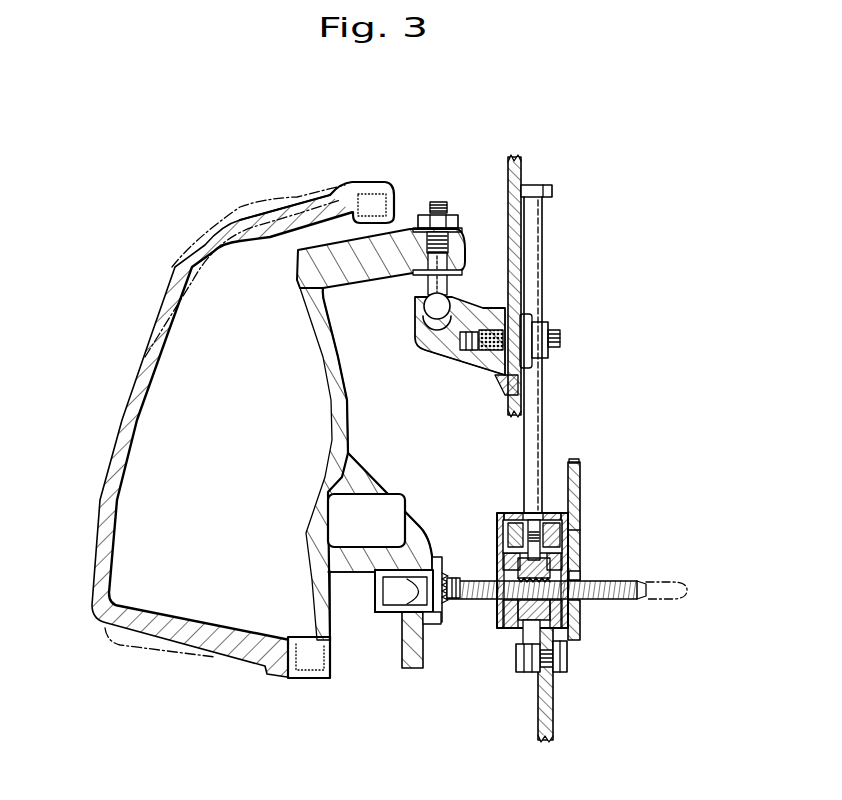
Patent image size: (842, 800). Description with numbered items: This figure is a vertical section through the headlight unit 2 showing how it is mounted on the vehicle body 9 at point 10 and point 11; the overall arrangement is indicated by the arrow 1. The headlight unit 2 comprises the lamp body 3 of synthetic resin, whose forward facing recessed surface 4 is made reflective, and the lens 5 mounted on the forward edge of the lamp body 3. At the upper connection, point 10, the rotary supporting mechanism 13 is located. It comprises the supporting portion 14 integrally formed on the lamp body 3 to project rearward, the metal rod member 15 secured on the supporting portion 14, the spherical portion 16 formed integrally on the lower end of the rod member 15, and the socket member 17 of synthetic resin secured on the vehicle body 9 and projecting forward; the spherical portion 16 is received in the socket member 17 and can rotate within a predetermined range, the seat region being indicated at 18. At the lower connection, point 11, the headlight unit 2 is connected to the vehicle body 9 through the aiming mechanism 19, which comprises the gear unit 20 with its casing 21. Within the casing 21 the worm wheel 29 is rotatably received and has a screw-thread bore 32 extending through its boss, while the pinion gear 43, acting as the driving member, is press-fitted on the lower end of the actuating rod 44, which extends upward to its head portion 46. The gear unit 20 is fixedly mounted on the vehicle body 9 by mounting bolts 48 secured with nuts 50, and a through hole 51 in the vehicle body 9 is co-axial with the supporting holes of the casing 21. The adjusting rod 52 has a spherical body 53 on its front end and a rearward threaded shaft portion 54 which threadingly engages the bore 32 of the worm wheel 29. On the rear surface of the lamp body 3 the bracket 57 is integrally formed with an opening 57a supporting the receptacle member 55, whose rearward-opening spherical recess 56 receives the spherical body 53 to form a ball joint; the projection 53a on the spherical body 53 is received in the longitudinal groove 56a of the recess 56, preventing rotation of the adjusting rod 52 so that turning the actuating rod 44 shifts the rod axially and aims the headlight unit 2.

The vehicle headlamp 1 is at (128, 240).
The headlight unit 2 is at (240, 205).
The lamp body 3 is at (347, 427).
The recessed surface 4 is at (322, 340).
The lens 5 is at (98, 532).
The vehicle body 9 is at (521, 163).
The point 10 is at (462, 288).
The point 11 is at (450, 560).
The rotary supporting mechanism 13 is at (430, 284).
The supporting portion 14 is at (409, 238).
The rod member 15 is at (430, 284).
The spherical portion 16 is at (424, 306).
The socket member 17 is at (430, 348).
The ball seat 18 is at (430, 319).
The aiming mechanism 19 is at (581, 500).
The gear unit 20 is at (581, 470).
The casing 21 is at (581, 530).
The worm wheel 29 is at (571, 639).
The screw-thread bore 32 is at (581, 606).
The pinion gear 43 is at (514, 511).
The actuating rod 44 is at (546, 434).
The head portion 46 is at (556, 191).
The mounting bolt 48 is at (515, 659).
The nut 50 is at (565, 670).
The through hole 51 is at (581, 575).
The adjusting rod 52 is at (460, 600).
The spherical body 53 is at (395, 614).
The projection 53a is at (378, 606).
The shaft portion 54 is at (483, 600).
The receptacle member 55 is at (400, 612).
The spherical recess 56 is at (434, 556).
The groove 56a is at (372, 560).
The bracket 57 is at (414, 669).
The opening 57a is at (428, 625).